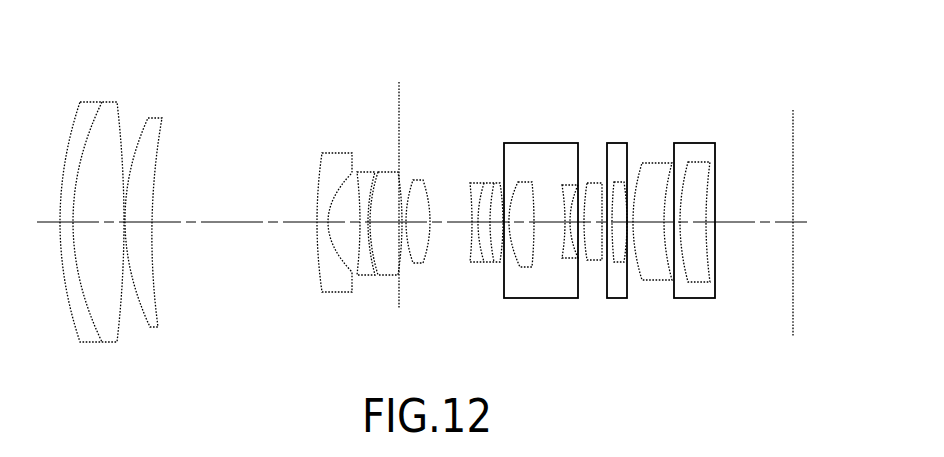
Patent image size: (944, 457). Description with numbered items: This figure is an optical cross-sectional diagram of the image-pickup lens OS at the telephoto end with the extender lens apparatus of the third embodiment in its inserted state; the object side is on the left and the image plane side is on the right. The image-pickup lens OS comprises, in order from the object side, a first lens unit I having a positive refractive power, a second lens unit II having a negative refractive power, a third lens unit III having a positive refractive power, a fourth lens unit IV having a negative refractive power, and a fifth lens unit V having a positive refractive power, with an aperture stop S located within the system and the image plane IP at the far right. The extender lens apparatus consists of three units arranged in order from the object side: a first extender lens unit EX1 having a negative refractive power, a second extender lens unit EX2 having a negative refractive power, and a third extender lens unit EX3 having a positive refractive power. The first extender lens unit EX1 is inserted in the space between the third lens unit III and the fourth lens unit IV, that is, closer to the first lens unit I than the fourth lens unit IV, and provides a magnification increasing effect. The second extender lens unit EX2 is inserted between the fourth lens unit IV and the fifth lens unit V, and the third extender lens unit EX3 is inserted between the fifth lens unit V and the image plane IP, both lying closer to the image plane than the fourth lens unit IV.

The image-pickup lens OS is at (441, 47).
The first lens unit I is at (168, 97).
The second lens unit II is at (395, 147).
The third lens unit III is at (415, 147).
The fourth lens unit IV is at (573, 136).
The fifth lens unit V is at (670, 137).
The aperture stop S is at (394, 183).
The first extender lens unit EX1 is at (541, 235).
The second extender lens unit EX2 is at (616, 235).
The third extender lens unit EX3 is at (694, 235).
The image plane IP is at (798, 209).